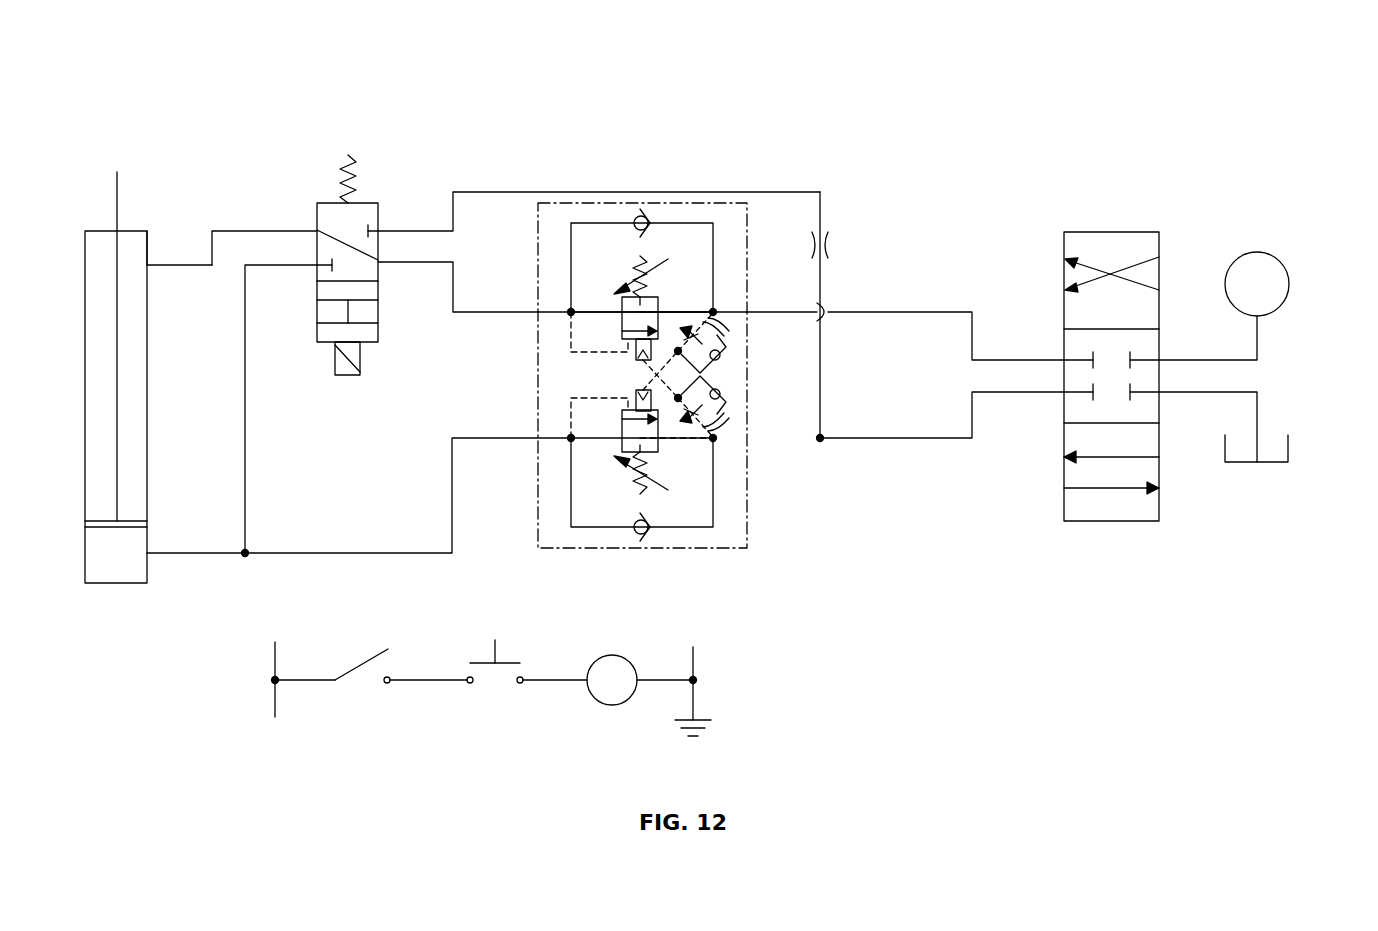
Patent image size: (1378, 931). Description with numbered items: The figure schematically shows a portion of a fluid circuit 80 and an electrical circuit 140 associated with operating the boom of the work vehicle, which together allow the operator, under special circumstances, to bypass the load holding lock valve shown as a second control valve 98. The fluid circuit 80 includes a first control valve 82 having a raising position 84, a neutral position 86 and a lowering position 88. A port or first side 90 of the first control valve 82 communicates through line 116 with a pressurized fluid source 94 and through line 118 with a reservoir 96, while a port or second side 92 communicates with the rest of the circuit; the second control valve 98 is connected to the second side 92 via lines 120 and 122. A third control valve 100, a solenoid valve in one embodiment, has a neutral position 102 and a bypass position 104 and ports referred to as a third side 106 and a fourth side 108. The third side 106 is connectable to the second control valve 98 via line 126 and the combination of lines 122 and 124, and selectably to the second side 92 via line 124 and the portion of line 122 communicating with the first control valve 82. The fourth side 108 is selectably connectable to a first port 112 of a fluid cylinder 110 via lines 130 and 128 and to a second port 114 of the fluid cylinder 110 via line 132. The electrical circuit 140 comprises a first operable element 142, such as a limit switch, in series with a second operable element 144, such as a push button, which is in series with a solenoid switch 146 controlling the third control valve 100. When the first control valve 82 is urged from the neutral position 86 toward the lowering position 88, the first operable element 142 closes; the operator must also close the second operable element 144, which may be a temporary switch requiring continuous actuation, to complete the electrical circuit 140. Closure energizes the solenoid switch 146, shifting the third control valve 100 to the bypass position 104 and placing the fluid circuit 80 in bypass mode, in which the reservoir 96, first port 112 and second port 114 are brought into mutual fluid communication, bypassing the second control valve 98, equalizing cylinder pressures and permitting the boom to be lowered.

The fluid circuit 80 is at (897, 83).
The first control valve 82 is at (1110, 232).
The raising position 84 is at (1160, 246).
The neutral position 86 is at (1160, 343).
The lowering position 88 is at (1160, 501).
The first side 90 is at (1160, 405).
The second side 92 is at (1064, 395).
The pressurized fluid source 94 is at (1260, 254).
The reservoir 96 is at (1257, 462).
The second control valve 98 is at (645, 548).
The third control valve 100 is at (365, 203).
The neutral position 102 is at (382, 230).
The bypass position 104 is at (382, 290).
The third side 106 is at (375, 345).
The fourth side 108 is at (318, 330).
The fluid cylinder 110 is at (98, 231).
The first port 112 is at (150, 553).
The second port 114 is at (150, 268).
The line 116 is at (1258, 340).
The line 118 is at (1258, 415).
The line 120 is at (880, 312).
The line 122 is at (880, 438).
The line 124 is at (821, 385).
The line 126 is at (503, 312).
The line 128 is at (343, 553).
The line 130 is at (245, 505).
The line 132 is at (260, 231).
The electrical circuit 140 is at (241, 776).
The first operable element 142 is at (362, 661).
The second operable element 144 is at (497, 652).
The solenoid switch 146 is at (615, 656).